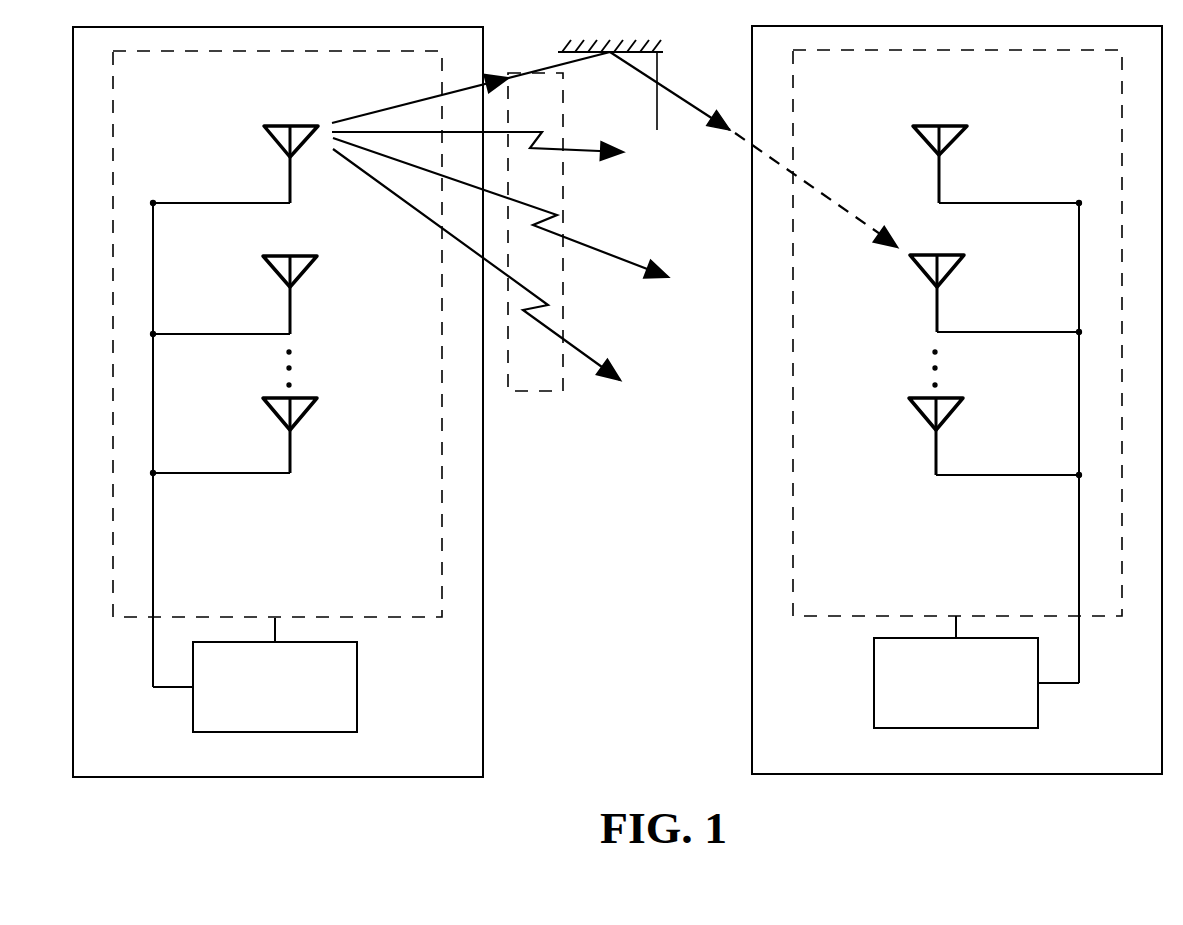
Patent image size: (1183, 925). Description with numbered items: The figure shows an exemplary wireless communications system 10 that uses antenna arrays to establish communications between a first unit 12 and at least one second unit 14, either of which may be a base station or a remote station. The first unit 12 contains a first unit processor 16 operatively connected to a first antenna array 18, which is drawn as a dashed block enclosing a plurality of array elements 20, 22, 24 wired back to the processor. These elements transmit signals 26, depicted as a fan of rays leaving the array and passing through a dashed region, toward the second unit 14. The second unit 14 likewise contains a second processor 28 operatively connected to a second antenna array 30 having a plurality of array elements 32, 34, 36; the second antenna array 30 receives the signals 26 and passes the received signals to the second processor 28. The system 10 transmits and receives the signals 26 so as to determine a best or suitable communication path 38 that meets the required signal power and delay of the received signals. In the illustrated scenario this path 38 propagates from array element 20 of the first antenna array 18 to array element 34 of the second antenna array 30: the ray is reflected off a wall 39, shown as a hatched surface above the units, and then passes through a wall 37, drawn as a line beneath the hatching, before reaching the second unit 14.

The system 10 is at (596, 784).
The first unit 12 is at (422, 776).
The second unit 14 is at (1082, 775).
The first unit processor 16 is at (357, 687).
The first antenna array 18 is at (438, 610).
The array element 20 is at (273, 125).
The array element 22 is at (305, 273).
The array element 24 is at (305, 413).
The signals 26 is at (565, 393).
The second processor 28 is at (874, 683).
The second antenna array 30 is at (793, 598).
The array element 32 is at (967, 133).
The array element 34 is at (963, 267).
The array element 36 is at (963, 408).
The wall 37 is at (662, 64).
The communication path 38 is at (711, 123).
The wall 39 is at (658, 36).